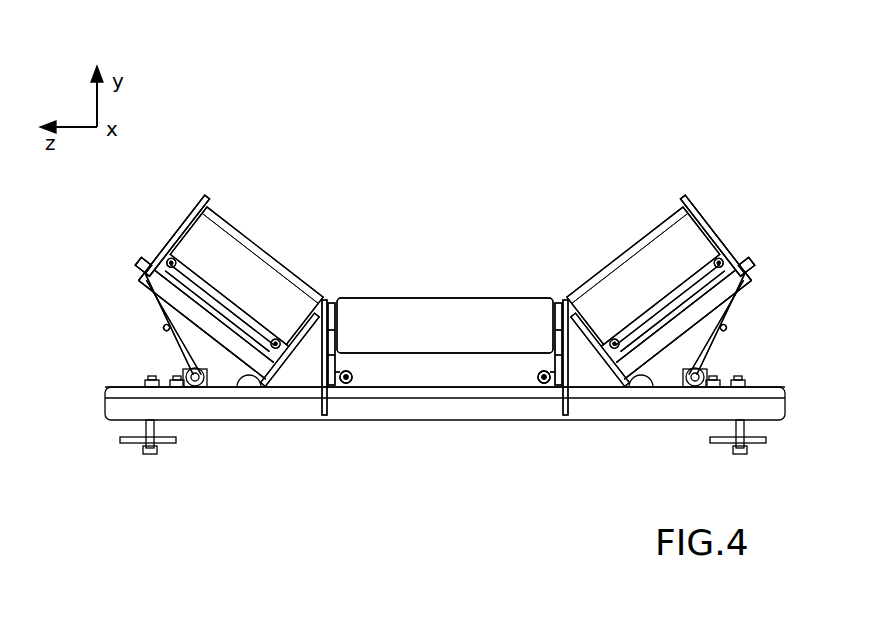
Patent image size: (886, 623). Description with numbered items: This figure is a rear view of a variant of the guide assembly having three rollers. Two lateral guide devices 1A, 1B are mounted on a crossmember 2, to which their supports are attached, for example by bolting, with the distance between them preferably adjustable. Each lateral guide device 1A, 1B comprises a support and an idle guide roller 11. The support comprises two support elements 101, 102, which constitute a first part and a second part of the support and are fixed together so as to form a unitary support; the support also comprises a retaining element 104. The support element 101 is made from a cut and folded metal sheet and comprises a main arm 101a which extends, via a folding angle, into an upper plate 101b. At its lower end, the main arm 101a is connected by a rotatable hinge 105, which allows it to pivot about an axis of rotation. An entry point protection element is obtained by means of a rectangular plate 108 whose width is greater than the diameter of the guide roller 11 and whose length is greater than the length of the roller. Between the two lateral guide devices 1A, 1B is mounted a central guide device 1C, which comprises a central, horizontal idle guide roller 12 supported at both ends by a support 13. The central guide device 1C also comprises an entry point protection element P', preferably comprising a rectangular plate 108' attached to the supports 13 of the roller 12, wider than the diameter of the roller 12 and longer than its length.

The lateral guide device 1A is at (292, 207).
The lateral guide device 1B is at (635, 210).
The central guide device 1C is at (488, 256).
The crossmember 2 is at (444, 409).
The guide roller 11 is at (232, 245).
The central guide roller 12 is at (412, 310).
The support 13 is at (335, 337).
The support element 101 is at (181, 207).
The main arm 101a is at (172, 338).
The upper plate 101b is at (178, 256).
The support element 102 is at (330, 297).
The retaining element 104 is at (228, 316).
The rotatable hinge 105 is at (202, 384).
The rectangular plate 108 is at (280, 308).
The rectangular plate 108' is at (491, 408).
The entry point protection element P' is at (445, 434).